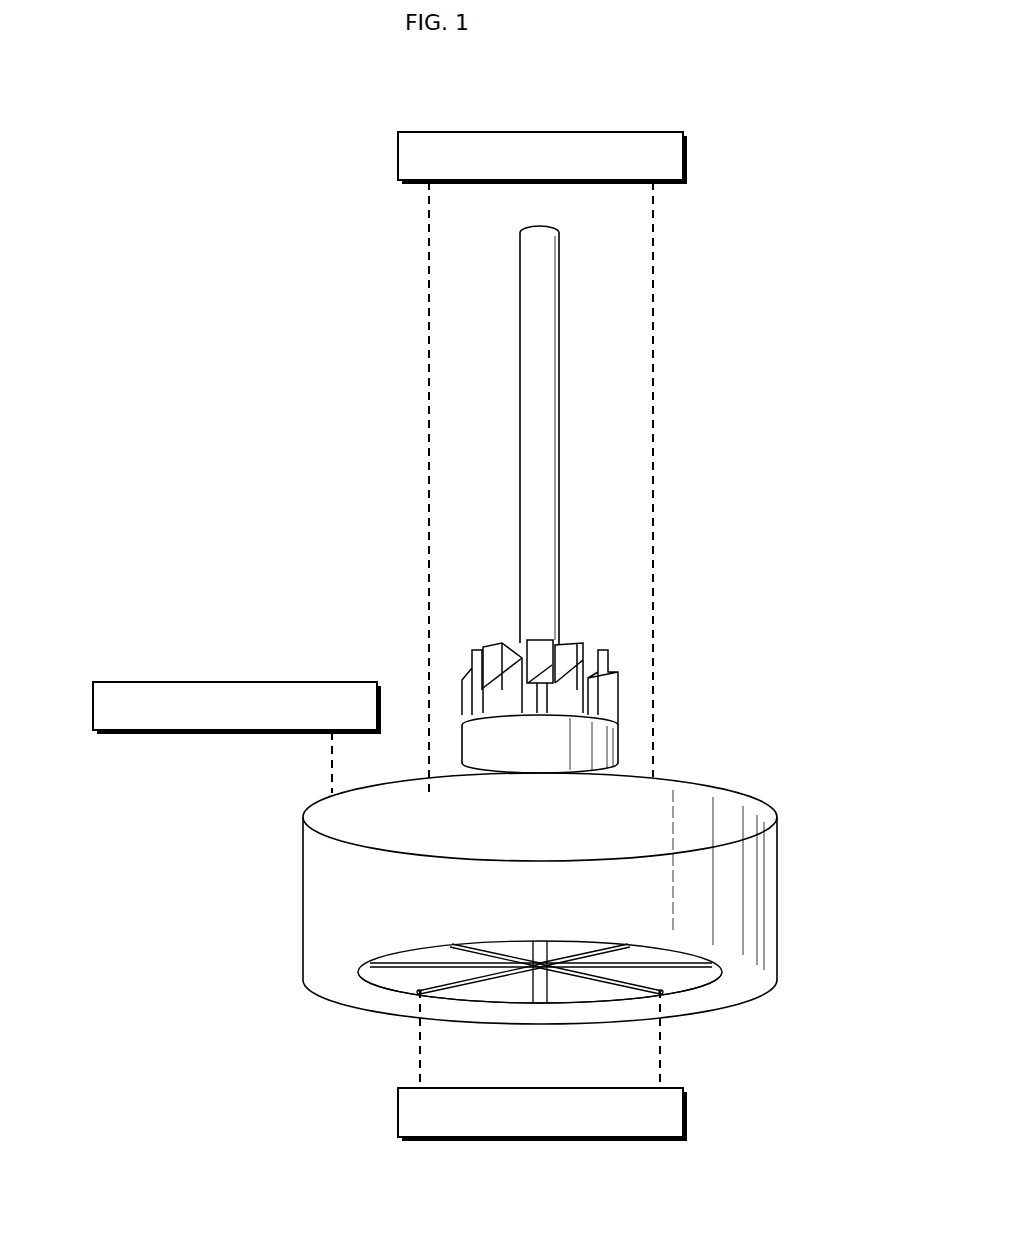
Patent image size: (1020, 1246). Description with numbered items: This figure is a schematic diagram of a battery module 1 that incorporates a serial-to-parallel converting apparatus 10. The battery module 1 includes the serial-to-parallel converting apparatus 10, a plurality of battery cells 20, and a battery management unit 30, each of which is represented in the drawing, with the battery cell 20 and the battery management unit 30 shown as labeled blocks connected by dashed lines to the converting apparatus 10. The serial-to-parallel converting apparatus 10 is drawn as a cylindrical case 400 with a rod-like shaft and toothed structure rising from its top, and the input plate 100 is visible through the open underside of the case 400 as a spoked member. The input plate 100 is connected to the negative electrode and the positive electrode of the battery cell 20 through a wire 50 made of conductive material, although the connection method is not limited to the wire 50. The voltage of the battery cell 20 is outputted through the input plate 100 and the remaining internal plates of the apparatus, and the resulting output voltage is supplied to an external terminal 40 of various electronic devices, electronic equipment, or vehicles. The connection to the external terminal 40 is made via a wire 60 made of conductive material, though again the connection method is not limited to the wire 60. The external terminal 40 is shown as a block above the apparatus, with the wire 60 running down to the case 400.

The battery module 1 is at (182, 162).
The serial-to-parallel converting apparatus 10 is at (716, 693).
The battery cell 20 is at (493, 1087).
The battery management unit 30 is at (187, 681).
The external terminal 40 is at (492, 131).
The wire 50 is at (419, 1050).
The wire 60 is at (427, 386).
The input plate 100 is at (683, 977).
The case 400 is at (722, 797).